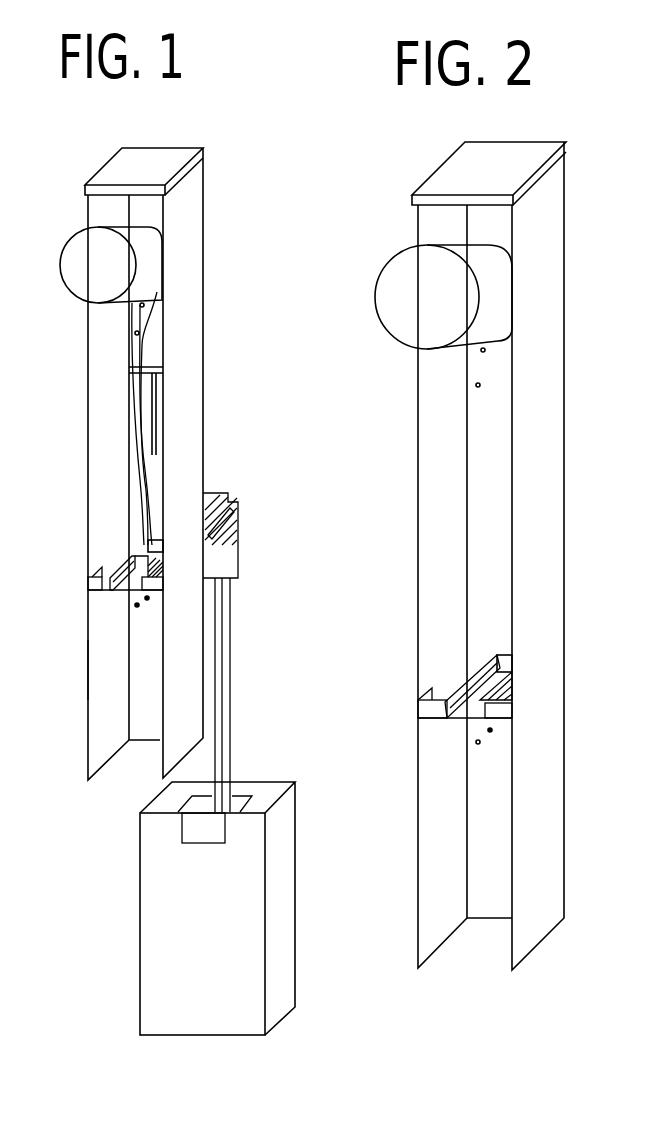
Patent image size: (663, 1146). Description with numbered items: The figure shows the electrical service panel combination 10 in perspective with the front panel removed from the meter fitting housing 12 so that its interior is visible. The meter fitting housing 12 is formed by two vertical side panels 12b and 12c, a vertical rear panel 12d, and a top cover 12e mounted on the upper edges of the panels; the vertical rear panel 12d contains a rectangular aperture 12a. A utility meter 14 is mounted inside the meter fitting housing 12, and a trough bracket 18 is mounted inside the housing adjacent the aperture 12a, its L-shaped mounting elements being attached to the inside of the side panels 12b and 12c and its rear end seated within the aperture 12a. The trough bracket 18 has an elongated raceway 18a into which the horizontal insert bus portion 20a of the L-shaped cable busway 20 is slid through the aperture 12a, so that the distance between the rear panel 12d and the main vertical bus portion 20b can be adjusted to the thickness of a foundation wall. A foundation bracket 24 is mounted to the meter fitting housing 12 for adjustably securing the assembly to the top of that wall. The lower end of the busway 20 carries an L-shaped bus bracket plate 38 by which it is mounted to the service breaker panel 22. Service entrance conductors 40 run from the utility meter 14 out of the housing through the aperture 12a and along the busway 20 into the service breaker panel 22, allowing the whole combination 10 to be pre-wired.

In FIG. 1, the electrical service panel combination 10 is at (247, 186).
In FIG. 1, the meter fitting housing 12 is at (183, 317).
In FIG. 2, the meter fitting housing 12 is at (549, 319).
In FIG. 1, the aperture 12a is at (146, 552).
In FIG. 2, the aperture 12a is at (505, 655).
In FIG. 1, the vertical side panel 12b is at (120, 392).
In FIG. 2, the vertical side panel 12b is at (456, 480).
In FIG. 1, the vertical side panel 12c is at (182, 378).
In FIG. 2, the vertical side panel 12c is at (552, 480).
In FIG. 1, the vertical rear panel 12d is at (161, 662).
In FIG. 2, the vertical rear panel 12d is at (504, 423).
In FIG. 1, the top cover 12e is at (140, 172).
In FIG. 2, the top cover 12e is at (503, 178).
In FIG. 1, the utility meter 14 is at (95, 297).
In FIG. 2, the utility meter 14 is at (404, 350).
In FIG. 1, the trough bracket 18 is at (96, 587).
In FIG. 2, the trough bracket 18 is at (495, 710).
In FIG. 1, the elongated raceway 18a is at (75, 670).
In FIG. 1, the cable busway 20 is at (230, 722).
In FIG. 1, the insert bus portion 20a is at (208, 492).
In FIG. 1, the main vertical bus portion 20b is at (216, 672).
In FIG. 1, the service breaker panel 22 is at (276, 984).
In FIG. 1, the foundation bracket 24 is at (217, 548).
In FIG. 1, the bus bracket plate 38 is at (202, 828).
In FIG. 1, the service entrance conductors 40 is at (140, 463).